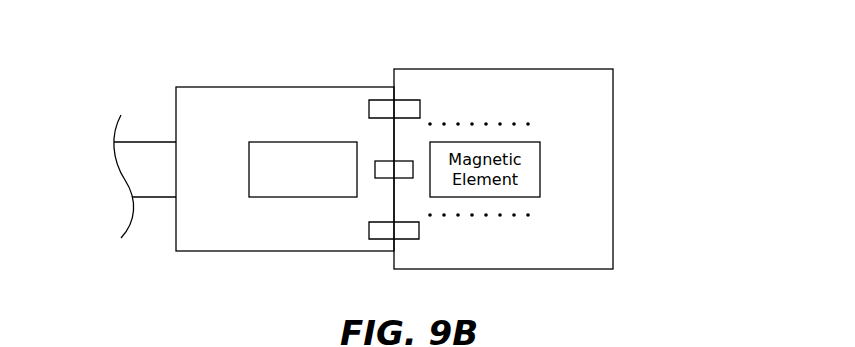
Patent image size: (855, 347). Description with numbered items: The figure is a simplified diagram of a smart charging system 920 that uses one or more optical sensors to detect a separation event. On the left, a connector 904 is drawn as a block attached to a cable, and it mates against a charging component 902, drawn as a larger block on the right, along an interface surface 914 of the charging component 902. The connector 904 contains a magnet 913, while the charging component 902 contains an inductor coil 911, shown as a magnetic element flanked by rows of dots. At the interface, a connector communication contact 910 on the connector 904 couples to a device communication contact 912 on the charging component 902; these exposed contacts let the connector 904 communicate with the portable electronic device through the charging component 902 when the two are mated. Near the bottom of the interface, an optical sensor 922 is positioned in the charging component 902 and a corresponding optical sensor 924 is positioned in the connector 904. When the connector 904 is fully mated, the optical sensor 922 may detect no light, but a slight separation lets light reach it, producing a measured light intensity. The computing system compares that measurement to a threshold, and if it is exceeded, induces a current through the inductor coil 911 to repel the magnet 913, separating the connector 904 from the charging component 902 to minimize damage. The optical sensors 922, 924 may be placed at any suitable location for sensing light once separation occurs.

The charging component 902 is at (642, 49).
The connector 904 is at (143, 71).
The connector communication contact 910 is at (380, 100).
The inductor coil 911 is at (499, 121).
The device communication contact 912 is at (407, 100).
The magnet 913 is at (303, 169).
The interface surface 914 is at (394, 148).
The smart charging system 920 is at (210, 40).
The optical sensor 922 is at (403, 239).
The optical sensor 924 is at (377, 239).